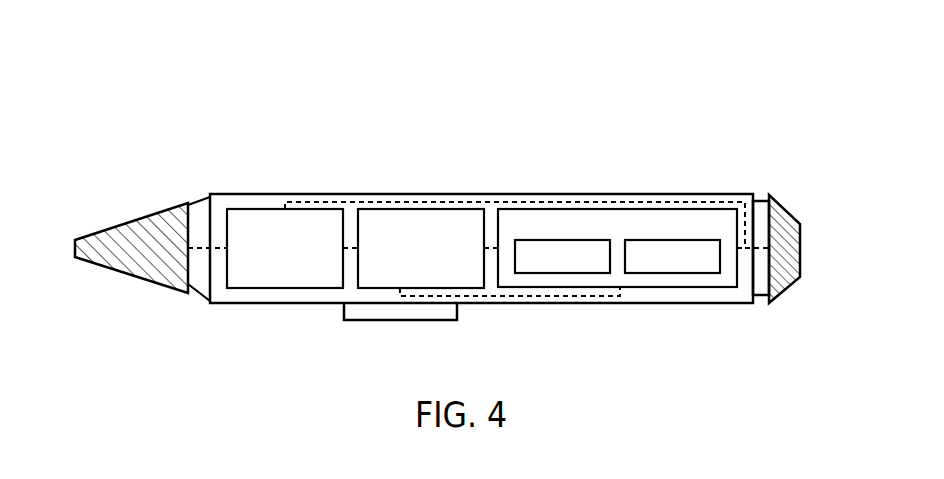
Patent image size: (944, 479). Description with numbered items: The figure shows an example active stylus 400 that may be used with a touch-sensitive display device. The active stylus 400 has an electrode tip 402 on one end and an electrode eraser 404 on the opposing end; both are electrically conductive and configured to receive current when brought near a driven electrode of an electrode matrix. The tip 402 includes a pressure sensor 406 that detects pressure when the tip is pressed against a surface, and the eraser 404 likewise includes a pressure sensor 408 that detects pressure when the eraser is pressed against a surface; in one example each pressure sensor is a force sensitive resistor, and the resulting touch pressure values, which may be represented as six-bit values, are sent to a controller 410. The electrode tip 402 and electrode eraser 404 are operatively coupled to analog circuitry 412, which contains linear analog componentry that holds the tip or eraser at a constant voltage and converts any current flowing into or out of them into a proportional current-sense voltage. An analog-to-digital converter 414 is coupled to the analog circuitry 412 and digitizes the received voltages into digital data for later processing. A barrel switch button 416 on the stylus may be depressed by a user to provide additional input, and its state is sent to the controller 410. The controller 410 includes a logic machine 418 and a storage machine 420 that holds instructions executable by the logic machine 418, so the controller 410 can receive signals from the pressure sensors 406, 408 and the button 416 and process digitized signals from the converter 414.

The active stylus 400 is at (709, 99).
The electrode tip 402 is at (149, 216).
The electrode eraser 404 is at (786, 213).
The pressure sensor 406 is at (208, 204).
The pressure sensor 408 is at (761, 201).
The controller 410 is at (693, 235).
The analog circuitry 412 is at (299, 282).
The analog-to-digital converter 414 is at (437, 283).
The barrel switch button 416 is at (370, 322).
The logic machine 418 is at (592, 266).
The storage machine 420 is at (703, 266).